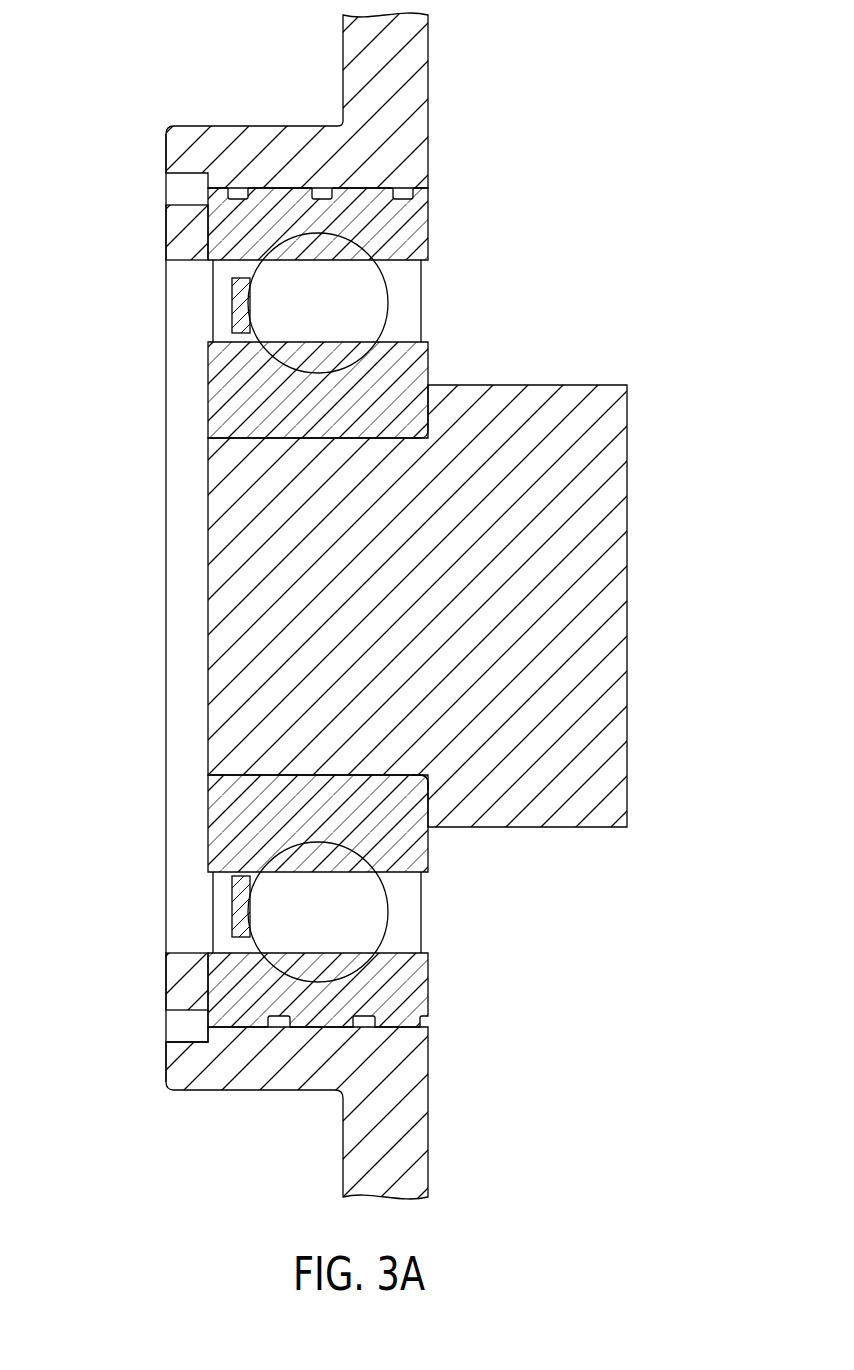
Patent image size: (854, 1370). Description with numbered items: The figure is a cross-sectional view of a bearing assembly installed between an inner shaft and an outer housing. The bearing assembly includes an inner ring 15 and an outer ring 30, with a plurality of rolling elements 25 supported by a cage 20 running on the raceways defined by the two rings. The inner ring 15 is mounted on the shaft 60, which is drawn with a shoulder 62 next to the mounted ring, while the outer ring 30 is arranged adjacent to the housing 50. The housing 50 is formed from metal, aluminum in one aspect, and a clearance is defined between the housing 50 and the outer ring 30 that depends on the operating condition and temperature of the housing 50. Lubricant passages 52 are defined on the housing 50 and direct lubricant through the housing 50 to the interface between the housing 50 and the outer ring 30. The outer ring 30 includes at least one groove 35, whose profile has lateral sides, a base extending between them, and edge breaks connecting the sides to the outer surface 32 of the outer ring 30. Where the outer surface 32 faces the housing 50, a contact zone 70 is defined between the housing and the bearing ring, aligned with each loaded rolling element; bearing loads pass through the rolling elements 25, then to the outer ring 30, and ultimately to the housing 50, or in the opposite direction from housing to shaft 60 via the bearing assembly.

The housing 50 is at (158, 141).
The outer ring 30 is at (198, 224).
The inner ring 15 is at (216, 388).
The groove 35 is at (237, 186).
The contact zone 70 is at (323, 186).
The outer surface 32 is at (405, 186).
The shaft 60 is at (645, 751).
The shoulder 62 is at (427, 775).
The rolling elements 25 is at (347, 903).
The cage 20 is at (240, 910).
The lubricant passages 52 is at (180, 1022).